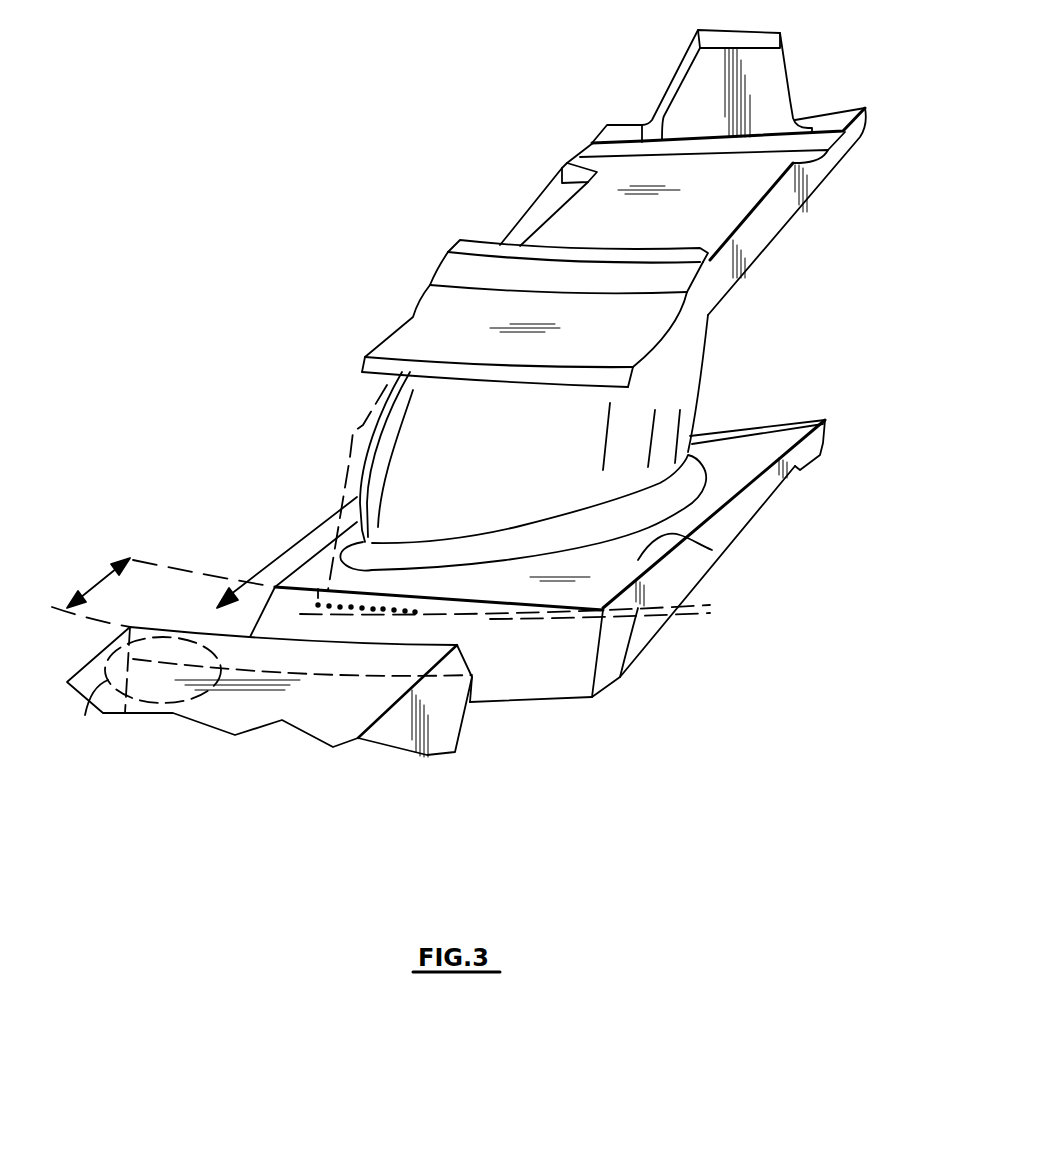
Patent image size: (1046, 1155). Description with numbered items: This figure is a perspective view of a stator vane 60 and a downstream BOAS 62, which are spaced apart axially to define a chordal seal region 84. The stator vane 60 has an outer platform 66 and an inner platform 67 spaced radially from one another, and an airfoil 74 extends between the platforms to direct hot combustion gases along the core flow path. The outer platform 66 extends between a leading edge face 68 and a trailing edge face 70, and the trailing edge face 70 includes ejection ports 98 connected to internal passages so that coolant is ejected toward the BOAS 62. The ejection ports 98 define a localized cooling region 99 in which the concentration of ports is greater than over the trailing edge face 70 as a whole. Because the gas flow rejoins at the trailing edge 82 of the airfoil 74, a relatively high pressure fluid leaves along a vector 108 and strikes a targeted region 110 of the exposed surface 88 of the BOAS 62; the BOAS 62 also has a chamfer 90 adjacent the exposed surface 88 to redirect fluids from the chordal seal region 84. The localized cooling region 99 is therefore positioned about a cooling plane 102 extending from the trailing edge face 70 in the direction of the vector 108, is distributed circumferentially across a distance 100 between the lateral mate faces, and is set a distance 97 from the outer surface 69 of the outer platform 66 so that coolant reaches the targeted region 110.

The stator vane 60 is at (462, 170).
The BOAS 62 is at (445, 792).
The outer platform 66 is at (752, 476).
The inner platform 67 is at (690, 229).
The leading edge face 68 is at (827, 441).
The outer surface 69 is at (712, 550).
The trailing edge face 70 is at (575, 691).
The airfoil 74 is at (557, 447).
The trailing edge 82 is at (380, 420).
The chordal seal region 84 is at (88, 593).
The exposed surface 88 is at (352, 721).
The chamfer 90 is at (467, 662).
The distance 97 is at (695, 570).
The ejection ports 98 is at (347, 607).
The localized cooling region 99 is at (367, 590).
The distance 100 is at (313, 623).
The cooling plane 102 is at (347, 470).
The vector 108 is at (282, 557).
The targeted region 110 is at (85, 715).